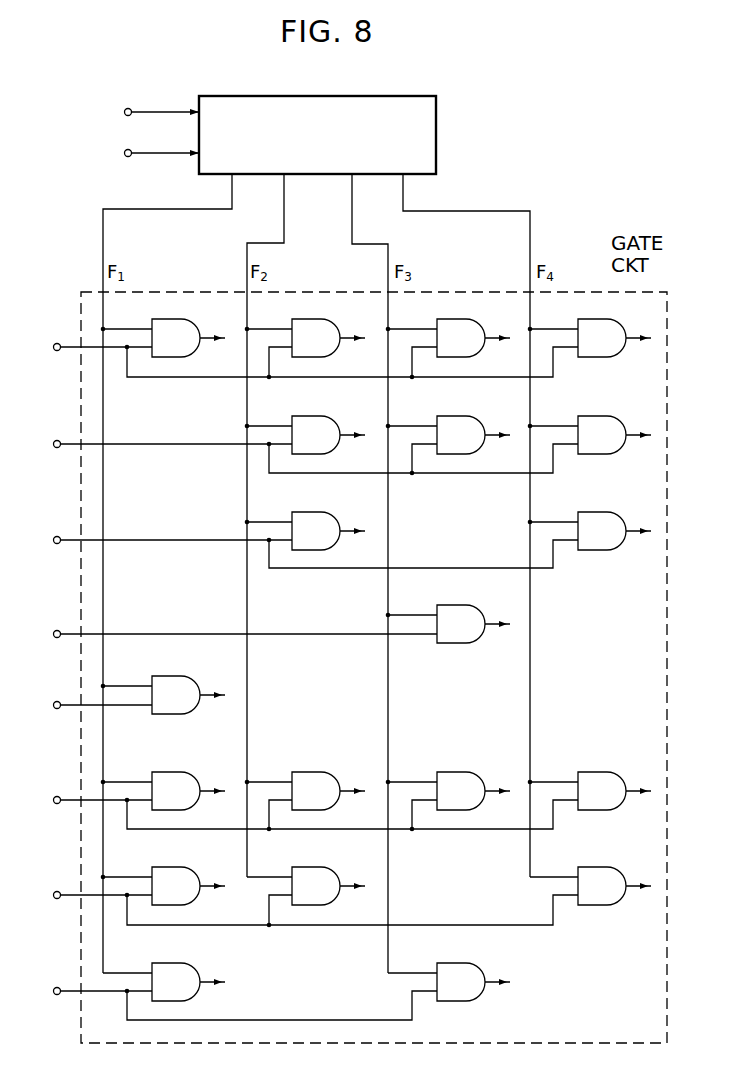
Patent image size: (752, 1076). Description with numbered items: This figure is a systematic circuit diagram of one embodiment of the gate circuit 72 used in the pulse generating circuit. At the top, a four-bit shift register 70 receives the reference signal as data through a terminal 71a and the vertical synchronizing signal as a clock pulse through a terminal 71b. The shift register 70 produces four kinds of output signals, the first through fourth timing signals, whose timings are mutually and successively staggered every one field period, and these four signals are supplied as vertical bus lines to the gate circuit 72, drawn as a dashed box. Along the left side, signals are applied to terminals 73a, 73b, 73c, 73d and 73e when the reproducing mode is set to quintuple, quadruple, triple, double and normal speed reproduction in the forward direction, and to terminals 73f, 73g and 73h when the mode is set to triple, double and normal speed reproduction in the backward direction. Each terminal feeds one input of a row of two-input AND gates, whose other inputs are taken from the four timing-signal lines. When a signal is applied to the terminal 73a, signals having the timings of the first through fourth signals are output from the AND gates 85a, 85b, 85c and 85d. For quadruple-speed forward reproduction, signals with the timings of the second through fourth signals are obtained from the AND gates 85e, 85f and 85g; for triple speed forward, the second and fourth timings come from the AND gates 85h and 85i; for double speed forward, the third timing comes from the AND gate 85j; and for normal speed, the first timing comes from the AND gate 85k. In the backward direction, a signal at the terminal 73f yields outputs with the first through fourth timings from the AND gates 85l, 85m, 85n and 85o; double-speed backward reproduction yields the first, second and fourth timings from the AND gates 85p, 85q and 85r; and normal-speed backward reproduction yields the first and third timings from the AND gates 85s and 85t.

The four-bit shift register 70 is at (436, 127).
The terminal 71a is at (126, 104).
The terminal 71b is at (124, 157).
The gate circuit 72 is at (583, 290).
The terminal 73a is at (56, 343).
The terminal 73b is at (56, 440).
The terminal 73c is at (56, 536).
The terminal 73d is at (56, 630).
The terminal 73e is at (56, 701).
The terminal 73f is at (56, 796).
The terminal 73g is at (56, 891).
The terminal 73h is at (56, 987).
The AND gate 85a is at (183, 319).
The AND gate 85b is at (323, 319).
The AND gate 85c is at (468, 319).
The AND gate 85d is at (609, 319).
The AND gate 85e is at (323, 416).
The AND gate 85f is at (468, 416).
The AND gate 85g is at (609, 416).
The AND gate 85h is at (323, 512).
The AND gate 85i is at (609, 512).
The AND gate 85j is at (468, 605).
The AND gate 85k is at (183, 676).
The AND gate 85l is at (183, 772).
The AND gate 85m is at (323, 772).
The AND gate 85n is at (468, 772).
The AND gate 85o is at (609, 772).
The AND gate 85p is at (183, 867).
The AND gate 85q is at (323, 867).
The AND gate 85r is at (609, 867).
The AND gate 85s is at (183, 963).
The AND gate 85t is at (468, 963).